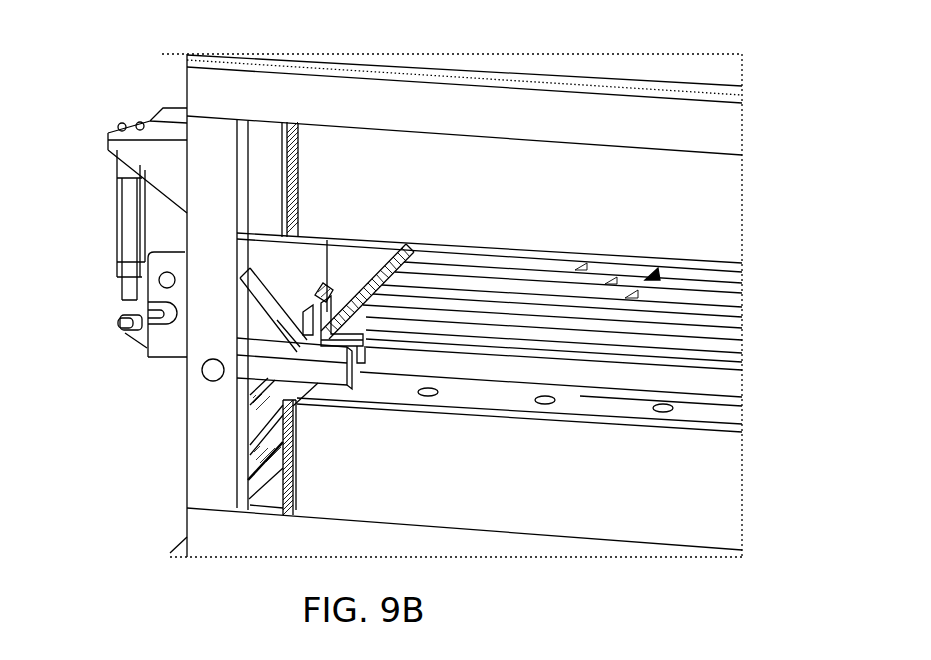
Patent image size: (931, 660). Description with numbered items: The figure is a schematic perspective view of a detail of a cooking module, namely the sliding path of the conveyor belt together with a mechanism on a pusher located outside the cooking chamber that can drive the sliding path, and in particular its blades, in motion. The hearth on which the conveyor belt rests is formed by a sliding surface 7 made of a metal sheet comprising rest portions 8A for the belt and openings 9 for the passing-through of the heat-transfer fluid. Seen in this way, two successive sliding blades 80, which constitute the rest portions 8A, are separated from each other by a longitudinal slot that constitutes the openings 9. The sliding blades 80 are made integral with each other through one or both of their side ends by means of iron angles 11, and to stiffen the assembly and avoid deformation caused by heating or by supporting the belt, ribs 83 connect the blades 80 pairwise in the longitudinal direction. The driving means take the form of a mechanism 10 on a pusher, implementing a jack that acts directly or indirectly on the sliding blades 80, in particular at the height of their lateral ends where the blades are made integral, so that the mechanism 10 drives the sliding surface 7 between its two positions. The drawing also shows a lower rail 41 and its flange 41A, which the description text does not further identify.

The sliding surface 7 is at (666, 324).
The rest portions 8A is at (652, 297).
The openings 9 is at (678, 283).
The pusher mechanism 10 is at (106, 310).
The iron angles 11 is at (338, 345).
The lower rail 41 is at (676, 408).
The lower rail flange 41A is at (617, 422).
The sliding blades 80 is at (692, 352).
The ribs 83 is at (652, 272).